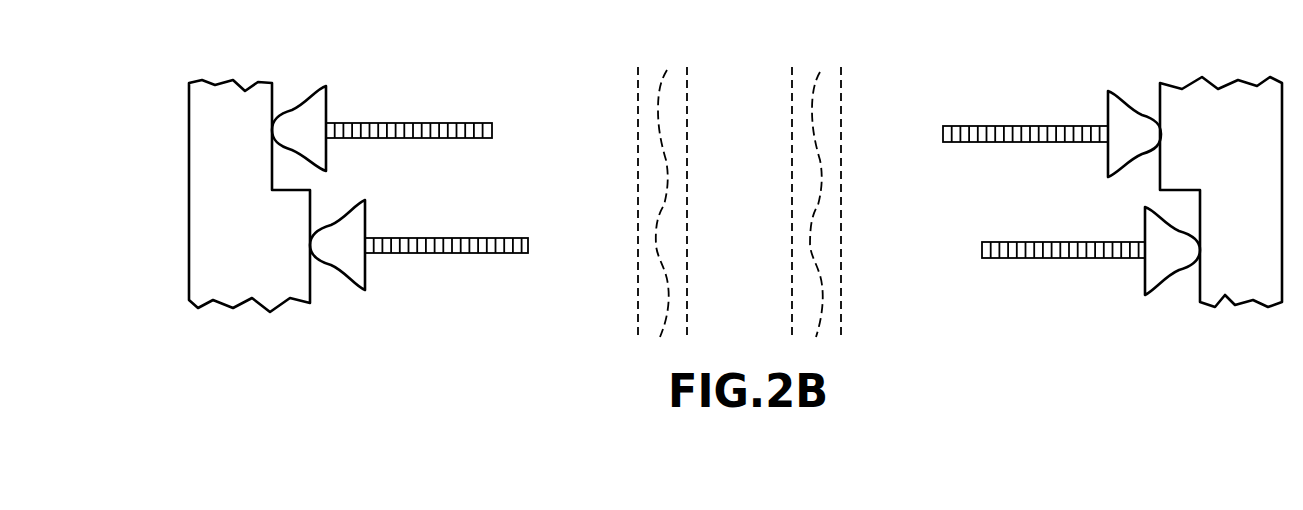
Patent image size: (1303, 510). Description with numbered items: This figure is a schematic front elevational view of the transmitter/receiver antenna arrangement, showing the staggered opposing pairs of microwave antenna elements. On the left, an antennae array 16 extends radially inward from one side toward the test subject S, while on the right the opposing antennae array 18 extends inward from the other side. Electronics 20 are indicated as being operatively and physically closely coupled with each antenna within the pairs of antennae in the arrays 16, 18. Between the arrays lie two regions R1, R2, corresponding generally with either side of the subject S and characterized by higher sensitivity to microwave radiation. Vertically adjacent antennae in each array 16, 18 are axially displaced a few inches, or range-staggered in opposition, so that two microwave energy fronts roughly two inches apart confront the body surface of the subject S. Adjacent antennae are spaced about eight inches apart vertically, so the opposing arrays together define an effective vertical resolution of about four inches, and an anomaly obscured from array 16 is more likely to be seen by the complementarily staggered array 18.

The antennae array 16 is at (419, 122).
The antennae array 18 is at (1028, 125).
The electronics 20 is at (268, 257).
The region R1 is at (696, 57).
The region R2 is at (853, 57).
The test subject S is at (660, 138).